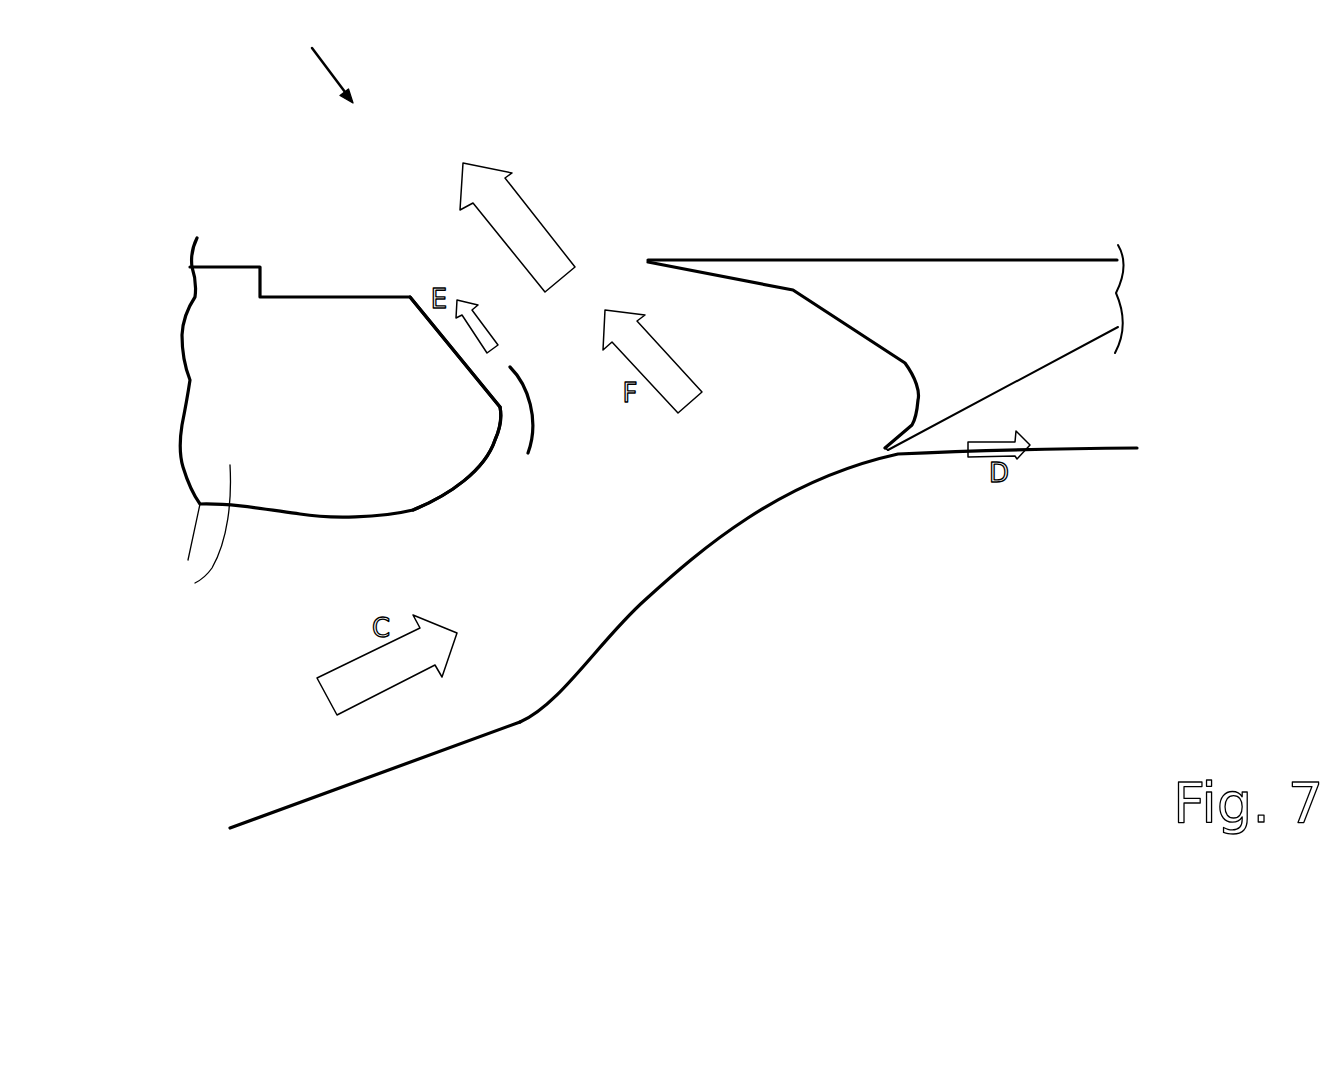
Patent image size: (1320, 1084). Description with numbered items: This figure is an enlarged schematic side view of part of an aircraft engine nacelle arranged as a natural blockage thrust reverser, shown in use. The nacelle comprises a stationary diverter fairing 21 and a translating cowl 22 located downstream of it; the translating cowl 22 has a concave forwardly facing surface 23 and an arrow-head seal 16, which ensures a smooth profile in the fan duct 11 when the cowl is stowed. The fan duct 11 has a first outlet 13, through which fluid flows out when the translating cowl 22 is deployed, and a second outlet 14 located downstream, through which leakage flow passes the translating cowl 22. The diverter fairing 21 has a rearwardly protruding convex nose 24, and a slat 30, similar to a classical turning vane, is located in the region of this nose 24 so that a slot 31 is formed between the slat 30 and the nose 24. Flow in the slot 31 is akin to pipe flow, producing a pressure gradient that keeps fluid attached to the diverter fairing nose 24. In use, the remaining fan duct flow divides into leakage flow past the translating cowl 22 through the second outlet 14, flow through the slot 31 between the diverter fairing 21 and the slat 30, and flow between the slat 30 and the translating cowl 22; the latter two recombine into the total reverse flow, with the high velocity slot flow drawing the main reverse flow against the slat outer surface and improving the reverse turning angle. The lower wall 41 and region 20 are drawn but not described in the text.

The fan duct 11 is at (387, 742).
The first outlet 13 is at (597, 267).
The second outlet 14 is at (1105, 407).
The arrow-head seal 16 is at (900, 455).
The neck portion 20 is at (195, 583).
The diverter fairing 21 is at (293, 260).
The translating cowl 22 is at (1018, 292).
The concave forwardly facing surface 23 is at (832, 310).
The convex nose 24 is at (467, 413).
The slat 30 is at (537, 437).
The slot 31 is at (515, 443).
The flow path wall 41 is at (522, 748).